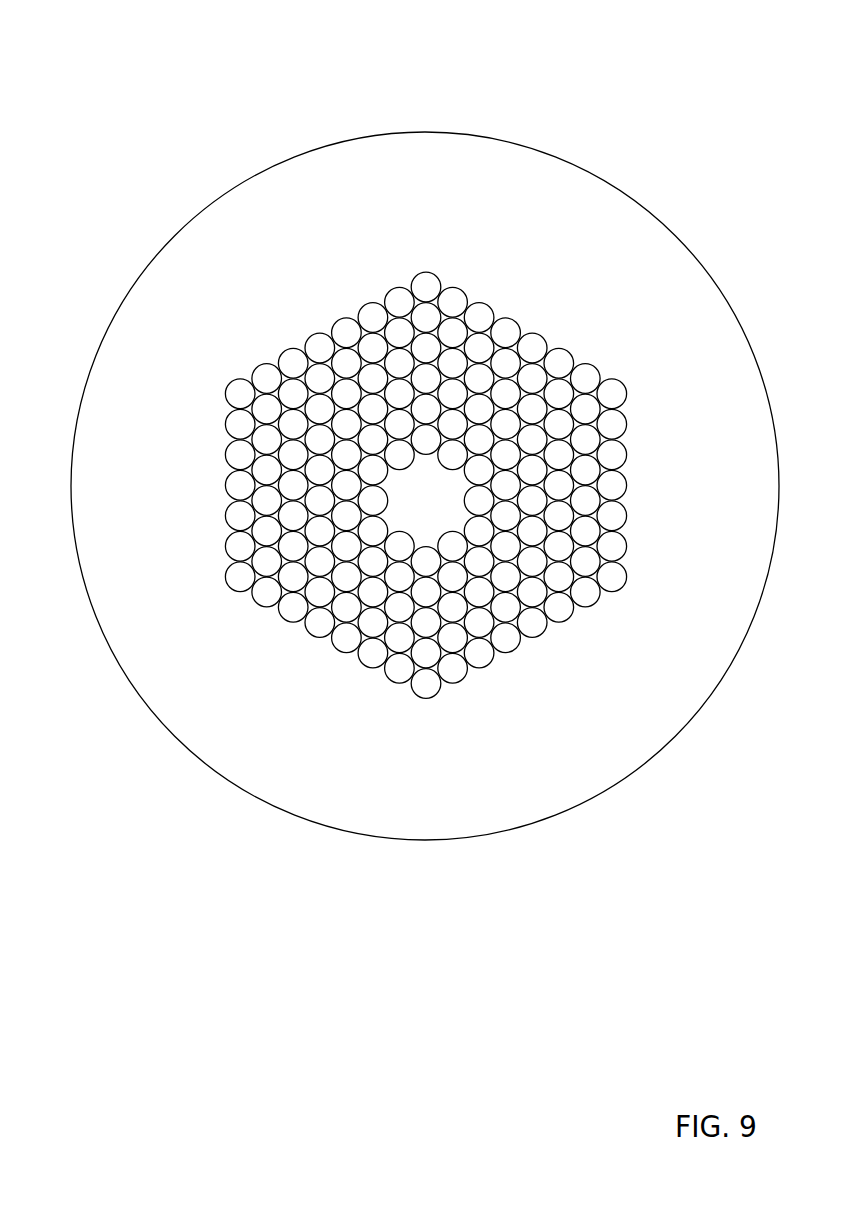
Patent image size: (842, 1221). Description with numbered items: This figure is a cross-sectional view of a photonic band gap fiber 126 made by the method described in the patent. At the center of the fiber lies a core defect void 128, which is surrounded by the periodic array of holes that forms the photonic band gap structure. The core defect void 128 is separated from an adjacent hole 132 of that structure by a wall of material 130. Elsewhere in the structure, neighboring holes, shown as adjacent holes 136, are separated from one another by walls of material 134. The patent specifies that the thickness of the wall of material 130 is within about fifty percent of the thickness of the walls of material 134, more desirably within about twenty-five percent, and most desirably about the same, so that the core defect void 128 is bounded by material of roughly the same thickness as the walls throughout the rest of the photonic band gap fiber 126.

The photonic band gap fiber 126 is at (232, 110).
The core defect void 128 is at (433, 490).
The wall of material 130 is at (427, 548).
The adjacent hole 132 is at (428, 565).
The walls of material 134 is at (374, 423).
The adjacent holes 136 is at (372, 438).